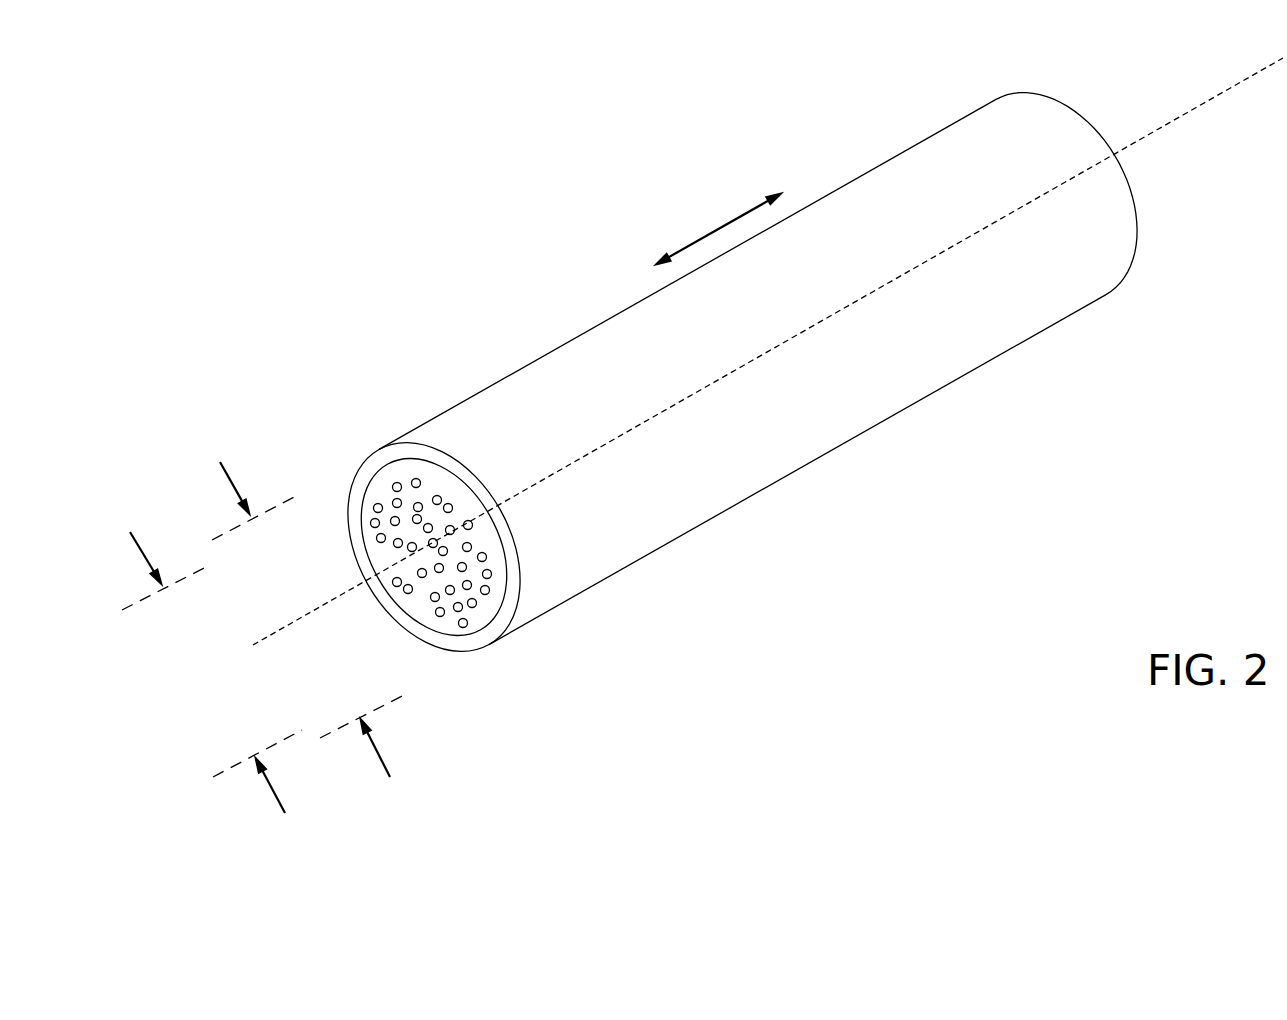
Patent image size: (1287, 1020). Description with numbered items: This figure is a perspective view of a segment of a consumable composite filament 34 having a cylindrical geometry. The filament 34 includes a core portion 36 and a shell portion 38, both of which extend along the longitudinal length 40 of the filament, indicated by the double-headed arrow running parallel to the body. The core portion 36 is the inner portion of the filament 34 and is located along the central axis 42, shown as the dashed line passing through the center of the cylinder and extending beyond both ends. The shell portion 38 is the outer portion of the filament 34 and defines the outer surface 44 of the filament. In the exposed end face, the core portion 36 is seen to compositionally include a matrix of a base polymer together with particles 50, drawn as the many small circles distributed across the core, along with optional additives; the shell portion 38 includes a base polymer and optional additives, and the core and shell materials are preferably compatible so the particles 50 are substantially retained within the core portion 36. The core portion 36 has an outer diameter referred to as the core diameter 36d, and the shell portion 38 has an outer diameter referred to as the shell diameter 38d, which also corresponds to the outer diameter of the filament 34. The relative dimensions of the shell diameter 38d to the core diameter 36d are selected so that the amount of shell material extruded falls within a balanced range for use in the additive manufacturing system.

The filament 34 is at (932, 493).
The core portion 36 is at (433, 603).
The core diameter 36d is at (142, 547).
The shell portion 38 is at (367, 462).
The shell diameter 38d is at (385, 760).
The longitudinal length 40 is at (722, 225).
The central axis 42 is at (305, 615).
The outer surface 44 is at (992, 343).
The particles 50 is at (492, 573).